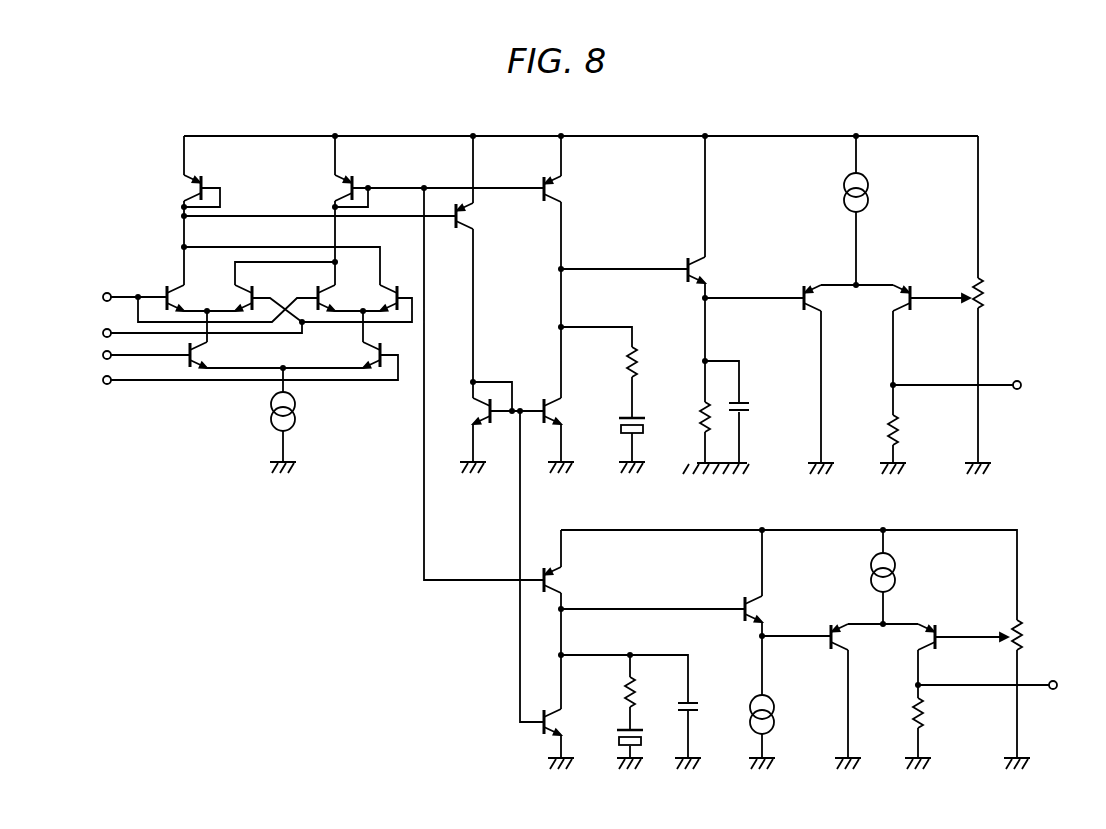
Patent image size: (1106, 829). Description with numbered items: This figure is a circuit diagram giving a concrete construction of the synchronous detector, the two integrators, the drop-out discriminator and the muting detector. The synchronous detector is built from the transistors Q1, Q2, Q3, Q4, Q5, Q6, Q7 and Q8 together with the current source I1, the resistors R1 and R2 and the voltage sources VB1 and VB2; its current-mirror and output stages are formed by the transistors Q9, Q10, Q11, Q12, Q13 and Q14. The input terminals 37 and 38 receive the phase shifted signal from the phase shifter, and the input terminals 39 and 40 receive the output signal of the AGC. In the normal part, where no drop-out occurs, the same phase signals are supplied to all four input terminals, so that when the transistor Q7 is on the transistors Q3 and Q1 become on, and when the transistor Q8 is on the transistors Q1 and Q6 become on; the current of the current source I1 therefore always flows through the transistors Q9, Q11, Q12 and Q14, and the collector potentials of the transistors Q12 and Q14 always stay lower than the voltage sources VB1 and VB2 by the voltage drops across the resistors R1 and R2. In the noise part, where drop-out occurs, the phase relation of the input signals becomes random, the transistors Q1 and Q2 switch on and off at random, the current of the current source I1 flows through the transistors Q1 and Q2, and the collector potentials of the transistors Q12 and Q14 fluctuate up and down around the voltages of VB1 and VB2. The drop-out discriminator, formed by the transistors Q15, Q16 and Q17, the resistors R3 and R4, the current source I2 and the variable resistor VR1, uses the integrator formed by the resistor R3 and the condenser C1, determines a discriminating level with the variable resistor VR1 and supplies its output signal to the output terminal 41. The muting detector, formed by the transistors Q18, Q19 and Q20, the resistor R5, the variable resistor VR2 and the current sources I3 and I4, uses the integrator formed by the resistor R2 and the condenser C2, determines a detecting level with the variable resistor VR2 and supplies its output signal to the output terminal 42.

The transistor Q1 is at (206, 176).
The transistor Q2 is at (356, 176).
The transistor Q3 is at (160, 286).
The transistor Q4 is at (254, 287).
The transistor Q5 is at (314, 287).
The transistor Q6 is at (399, 287).
The transistor Q7 is at (213, 352).
The transistor Q8 is at (355, 352).
The transistor Q9 is at (479, 216).
The transistor Q10 is at (545, 177).
The transistor Q11 is at (464, 412).
The transistor Q12 is at (572, 412).
The transistor Q13 is at (572, 583).
The transistor Q14 is at (572, 726).
The transistor Q15 is at (686, 256).
The transistor Q16 is at (803, 284).
The transistor Q17 is at (912, 284).
The transistor Q18 is at (739, 596).
The transistor Q19 is at (829, 625).
The transistor Q20 is at (941, 625).
The resistor R1 is at (646, 362).
The resistor R2 is at (645, 693).
The resistor R3 is at (689, 417).
The resistor R4 is at (905, 432).
The resistor R5 is at (932, 716).
The variable resistor VR1 is at (1004, 296).
The variable resistor VR2 is at (1040, 638).
The condenser C1 is at (756, 411).
The condenser C2 is at (702, 711).
The voltage source VB1 is at (653, 435).
The voltage source VB2 is at (652, 745).
The current source I1 is at (293, 411).
The current source I2 is at (869, 192).
The current source I3 is at (772, 717).
The current source I4 is at (893, 573).
The input terminal 37 is at (103, 297).
The input terminal 38 is at (103, 333).
The input terminal 39 is at (103, 355).
The input terminal 40 is at (103, 380).
The output terminal 41 is at (1020, 382).
The output terminal 42 is at (1056, 689).